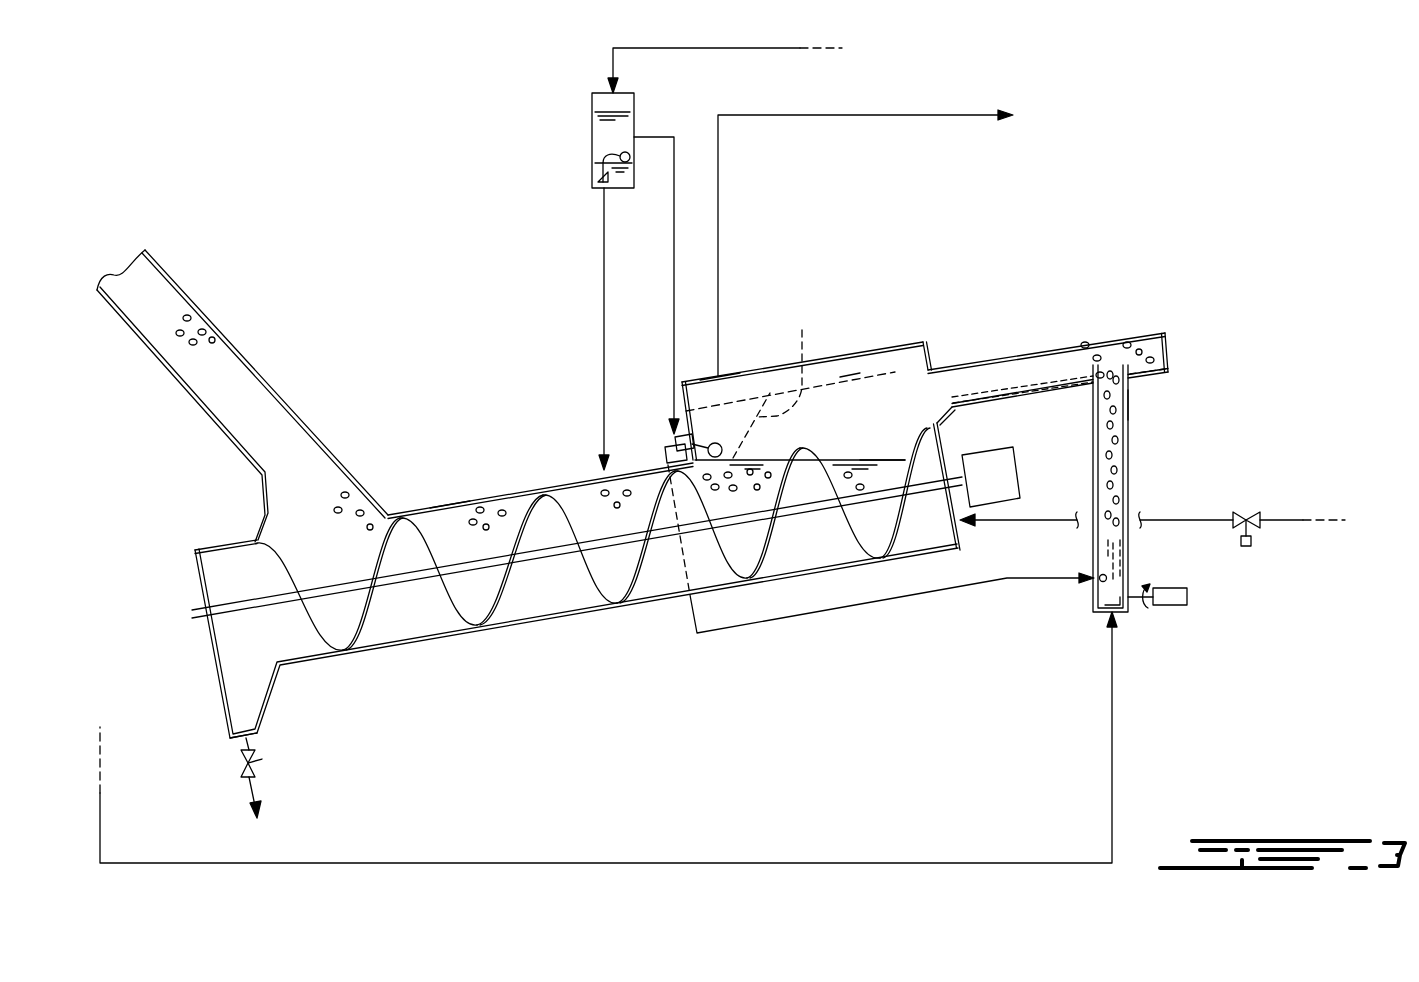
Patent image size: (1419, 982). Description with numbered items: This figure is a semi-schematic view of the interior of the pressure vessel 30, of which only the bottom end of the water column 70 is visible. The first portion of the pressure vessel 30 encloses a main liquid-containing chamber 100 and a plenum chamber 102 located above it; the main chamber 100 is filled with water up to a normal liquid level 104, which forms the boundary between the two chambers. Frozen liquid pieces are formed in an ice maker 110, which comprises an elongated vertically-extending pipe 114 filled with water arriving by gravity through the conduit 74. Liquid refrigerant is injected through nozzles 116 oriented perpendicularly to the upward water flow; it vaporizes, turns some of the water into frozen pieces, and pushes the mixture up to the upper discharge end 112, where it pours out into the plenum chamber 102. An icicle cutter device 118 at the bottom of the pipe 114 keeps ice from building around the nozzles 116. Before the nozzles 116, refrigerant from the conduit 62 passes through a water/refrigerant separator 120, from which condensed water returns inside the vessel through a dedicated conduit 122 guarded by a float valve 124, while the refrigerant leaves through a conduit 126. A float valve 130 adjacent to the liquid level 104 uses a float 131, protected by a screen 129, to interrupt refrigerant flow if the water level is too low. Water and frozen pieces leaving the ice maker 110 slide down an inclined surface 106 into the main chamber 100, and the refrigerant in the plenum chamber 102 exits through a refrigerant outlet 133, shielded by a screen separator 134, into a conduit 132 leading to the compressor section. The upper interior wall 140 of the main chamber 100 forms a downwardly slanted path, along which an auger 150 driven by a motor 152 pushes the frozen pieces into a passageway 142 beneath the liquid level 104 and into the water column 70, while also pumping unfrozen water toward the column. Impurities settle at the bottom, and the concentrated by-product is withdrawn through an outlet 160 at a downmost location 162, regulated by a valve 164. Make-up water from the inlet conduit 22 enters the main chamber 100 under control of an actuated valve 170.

The inlet conduit 22 is at (1280, 518).
The pressure vessel 30 is at (422, 285).
The conduit 62 is at (702, 48).
The water column 70 is at (178, 283).
The conduit 74 is at (883, 862).
The main liquid-containing chamber 100 is at (540, 598).
The plenum chamber 102 is at (882, 444).
The normal liquid level 104 is at (886, 450).
The inclined surface 106 is at (1075, 348).
The ice maker 110 is at (1176, 478).
The upper discharge end 112 is at (1166, 344).
The elongated vertically-extending pipe 114 is at (1128, 408).
The nozzles 116 is at (1097, 600).
The icicle cutter device 118 is at (1170, 600).
The water/refrigerant separator 120 is at (592, 103).
The dedicated conduit 122 is at (603, 268).
The float valve 124 is at (612, 163).
The conduit 126 is at (673, 266).
The screen 129 is at (802, 330).
The float valve 130 is at (665, 441).
The float 131 is at (716, 447).
The conduit 132 is at (920, 115).
The refrigerant outlet 133 is at (727, 377).
The screen separator 134 is at (850, 373).
The upper interior wall 140 is at (448, 502).
The passageway 142 is at (318, 537).
The auger 150 is at (615, 580).
The motor 152 is at (997, 477).
The outlet 160 is at (255, 787).
The downmost location 162 is at (250, 700).
The valve 164 is at (240, 759).
The actuated valve 170 is at (1246, 549).